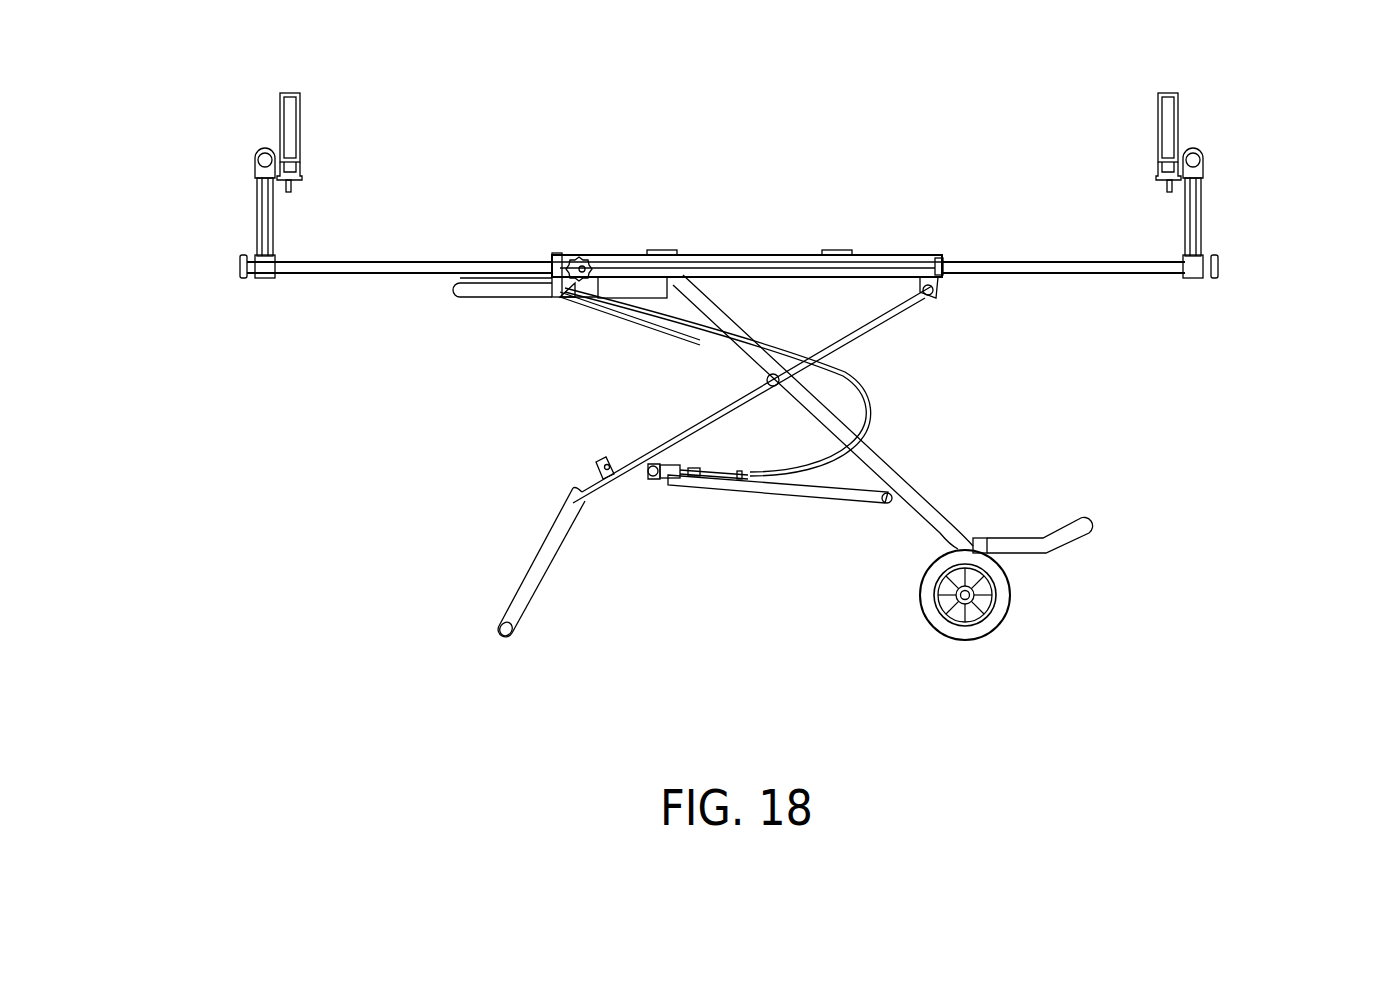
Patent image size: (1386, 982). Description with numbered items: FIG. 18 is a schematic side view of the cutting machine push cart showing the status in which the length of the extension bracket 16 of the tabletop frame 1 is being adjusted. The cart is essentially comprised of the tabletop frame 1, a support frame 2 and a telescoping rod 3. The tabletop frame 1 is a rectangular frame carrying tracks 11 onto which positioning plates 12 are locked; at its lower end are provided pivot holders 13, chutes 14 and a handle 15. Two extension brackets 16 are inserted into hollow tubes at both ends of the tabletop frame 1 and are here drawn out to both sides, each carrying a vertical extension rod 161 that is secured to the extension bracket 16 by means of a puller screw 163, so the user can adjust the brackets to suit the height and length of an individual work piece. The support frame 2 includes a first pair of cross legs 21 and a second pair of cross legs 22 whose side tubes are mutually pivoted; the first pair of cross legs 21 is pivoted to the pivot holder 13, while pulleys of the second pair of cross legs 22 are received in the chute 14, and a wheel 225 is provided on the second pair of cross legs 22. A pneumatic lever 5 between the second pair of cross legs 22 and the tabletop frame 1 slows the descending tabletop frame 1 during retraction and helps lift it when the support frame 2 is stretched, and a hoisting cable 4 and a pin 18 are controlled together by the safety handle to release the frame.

The tabletop frame 1 is at (902, 262).
The track 11 is at (747, 255).
The positioning plate 12 is at (658, 248).
The pivot holder 13 is at (940, 284).
The chute 14 is at (613, 290).
The handle 15 is at (455, 289).
The extension bracket 16 is at (250, 157).
The extension rod 161 is at (262, 215).
The puller screw 163 is at (233, 272).
The pin 18 is at (565, 250).
The support frame 2 is at (717, 412).
The first pair of cross legs 21 is at (530, 561).
The second pair of cross legs 22 is at (1049, 538).
The wheel 225 is at (1007, 594).
The telescoping rod 3 is at (752, 490).
The hoisting cable 4 is at (862, 405).
The pneumatic lever 5 is at (683, 323).